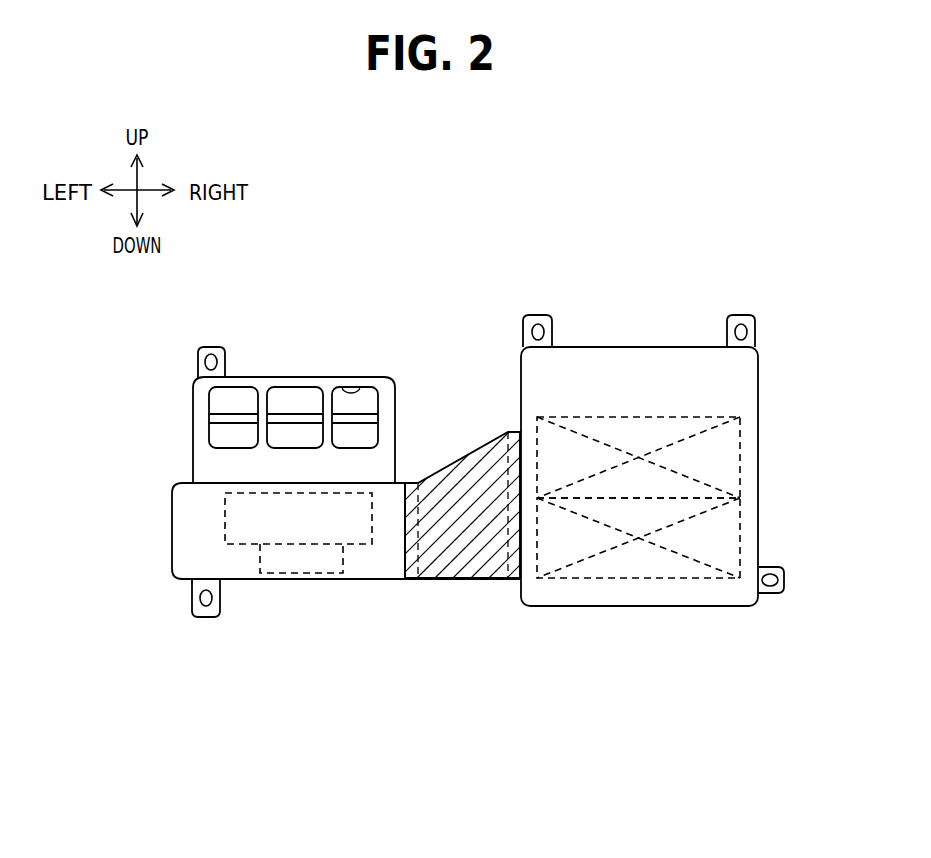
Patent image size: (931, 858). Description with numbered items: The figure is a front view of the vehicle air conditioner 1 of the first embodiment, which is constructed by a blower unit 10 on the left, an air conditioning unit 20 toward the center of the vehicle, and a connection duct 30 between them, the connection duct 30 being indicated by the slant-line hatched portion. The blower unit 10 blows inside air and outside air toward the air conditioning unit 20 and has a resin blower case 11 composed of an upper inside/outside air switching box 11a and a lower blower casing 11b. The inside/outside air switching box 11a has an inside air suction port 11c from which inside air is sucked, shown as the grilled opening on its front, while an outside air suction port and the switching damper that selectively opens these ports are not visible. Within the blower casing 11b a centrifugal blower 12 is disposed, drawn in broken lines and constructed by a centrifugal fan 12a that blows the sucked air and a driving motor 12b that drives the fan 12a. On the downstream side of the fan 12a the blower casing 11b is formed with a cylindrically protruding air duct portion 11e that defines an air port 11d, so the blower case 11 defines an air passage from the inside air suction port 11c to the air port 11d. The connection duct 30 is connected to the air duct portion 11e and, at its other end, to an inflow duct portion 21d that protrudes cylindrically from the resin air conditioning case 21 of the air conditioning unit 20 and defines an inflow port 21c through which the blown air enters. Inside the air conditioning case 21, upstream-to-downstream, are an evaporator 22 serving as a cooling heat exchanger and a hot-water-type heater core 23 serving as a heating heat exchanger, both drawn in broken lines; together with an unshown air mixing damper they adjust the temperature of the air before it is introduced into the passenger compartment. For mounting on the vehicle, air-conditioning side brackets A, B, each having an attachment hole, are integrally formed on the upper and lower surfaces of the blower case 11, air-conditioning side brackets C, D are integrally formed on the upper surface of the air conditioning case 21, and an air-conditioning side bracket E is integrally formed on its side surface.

The air conditioner 1 is at (585, 222).
The blower unit 10 is at (392, 377).
The blower case 11 is at (102, 415).
The inside/outside air switching box 11a is at (193, 428).
The blower casing 11b is at (172, 517).
The inside air suction port 11c is at (356, 386).
The air port 11d is at (443, 580).
The air duct portion 11e is at (410, 580).
The centrifugal blower 12 is at (228, 661).
The centrifugal fan 12a is at (248, 545).
The driving motor 12b is at (300, 574).
The air conditioning unit 20 is at (574, 347).
The air conditioning case 21 is at (758, 393).
The inflow port 21c is at (487, 580).
The inflow duct portion 21d is at (510, 580).
The evaporator 22 is at (740, 465).
The heater core 23 is at (740, 538).
The connection duct 30 is at (455, 462).
The air-conditioning side bracket A is at (213, 346).
The air-conditioning side bracket B is at (202, 616).
The air-conditioning side bracket C is at (537, 315).
The air-conditioning side bracket D is at (741, 315).
The air-conditioning side bracket E is at (785, 575).